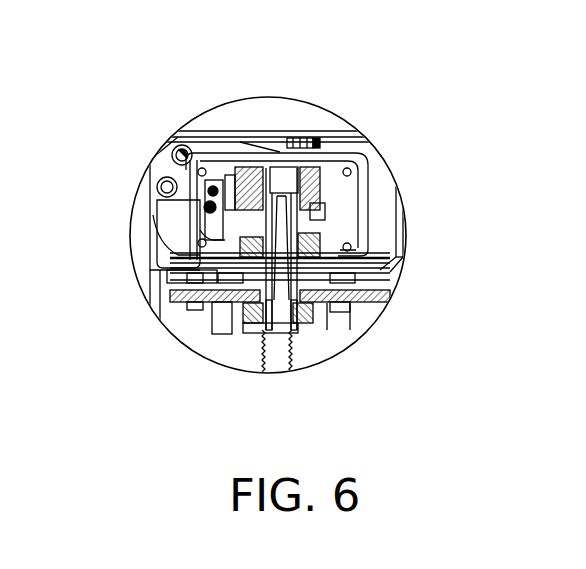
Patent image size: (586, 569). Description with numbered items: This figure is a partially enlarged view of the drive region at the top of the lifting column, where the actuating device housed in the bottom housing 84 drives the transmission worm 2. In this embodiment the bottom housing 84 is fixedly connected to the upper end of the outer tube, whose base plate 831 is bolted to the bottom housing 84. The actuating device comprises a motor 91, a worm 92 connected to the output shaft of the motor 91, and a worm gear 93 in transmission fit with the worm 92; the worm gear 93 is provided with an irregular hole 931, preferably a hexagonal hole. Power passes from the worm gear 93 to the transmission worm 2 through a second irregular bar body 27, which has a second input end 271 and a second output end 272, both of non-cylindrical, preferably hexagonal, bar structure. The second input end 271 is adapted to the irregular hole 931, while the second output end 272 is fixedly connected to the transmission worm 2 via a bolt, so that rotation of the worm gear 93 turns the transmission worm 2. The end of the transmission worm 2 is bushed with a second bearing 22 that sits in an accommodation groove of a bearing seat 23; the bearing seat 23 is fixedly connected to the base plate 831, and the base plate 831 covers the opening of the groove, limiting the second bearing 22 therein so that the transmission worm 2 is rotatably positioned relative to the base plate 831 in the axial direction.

The transmission worm 2 is at (283, 348).
The second bearing 22 is at (238, 328).
The bearing seat 23 is at (222, 318).
The second irregular bar body 27 is at (403, 250).
The second input end 271 is at (326, 213).
The second output end 272 is at (322, 272).
The bottom housing 84 is at (158, 172).
The base plate 831 is at (172, 298).
The motor 91 is at (372, 152).
The worm 92 is at (148, 198).
The worm gear 93 is at (226, 195).
The irregular hole 931 is at (322, 179).